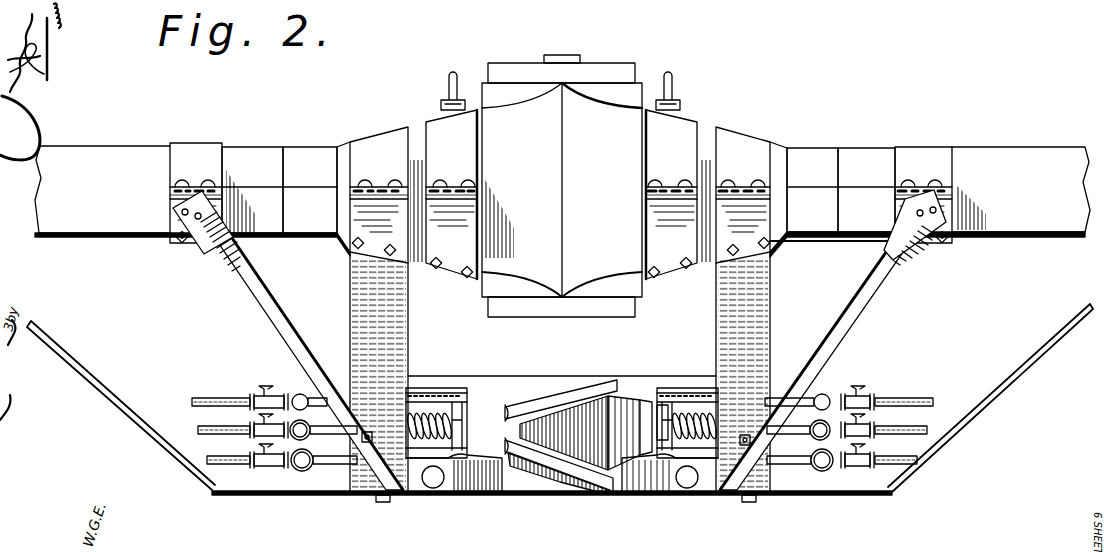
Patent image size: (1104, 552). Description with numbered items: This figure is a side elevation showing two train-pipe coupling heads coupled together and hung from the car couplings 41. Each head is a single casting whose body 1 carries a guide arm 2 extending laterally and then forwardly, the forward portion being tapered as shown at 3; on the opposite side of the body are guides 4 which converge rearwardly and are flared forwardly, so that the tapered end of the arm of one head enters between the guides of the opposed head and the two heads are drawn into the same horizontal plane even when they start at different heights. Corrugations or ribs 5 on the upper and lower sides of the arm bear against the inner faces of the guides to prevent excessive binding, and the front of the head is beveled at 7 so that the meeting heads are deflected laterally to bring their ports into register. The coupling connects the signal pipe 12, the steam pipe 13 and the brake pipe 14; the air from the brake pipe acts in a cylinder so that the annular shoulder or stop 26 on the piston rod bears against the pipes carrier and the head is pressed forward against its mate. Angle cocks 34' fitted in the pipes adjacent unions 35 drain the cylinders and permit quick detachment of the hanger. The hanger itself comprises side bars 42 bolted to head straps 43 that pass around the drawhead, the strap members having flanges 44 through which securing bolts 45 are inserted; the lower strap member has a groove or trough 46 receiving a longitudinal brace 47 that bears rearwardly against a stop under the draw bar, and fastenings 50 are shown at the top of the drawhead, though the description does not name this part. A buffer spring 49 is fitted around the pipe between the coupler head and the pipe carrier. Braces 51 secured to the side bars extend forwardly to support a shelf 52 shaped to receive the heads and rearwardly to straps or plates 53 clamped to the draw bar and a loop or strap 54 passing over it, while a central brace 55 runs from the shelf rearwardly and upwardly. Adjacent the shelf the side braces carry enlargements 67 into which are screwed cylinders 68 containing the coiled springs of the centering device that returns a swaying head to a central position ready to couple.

The body 1 is at (515, 478).
The guide arm 2 is at (564, 433).
The tapered end 3 is at (517, 434).
The guides 4 is at (560, 410).
The corrugations or ribs 5 is at (617, 391).
The beveled front 7 is at (648, 394).
The signal pipe 12 is at (210, 398).
The steam pipe 13 is at (220, 466).
The brake pipe 14 is at (198, 430).
The annular shoulder or stop 26 is at (668, 408).
The angle cocks 34' is at (580, 446).
The unions 35 is at (299, 396).
The car coupling 41 is at (562, 186).
The side bars 42 is at (560, 372).
The head straps 43 is at (561, 207).
The flanges 44 is at (380, 182).
The securing bolts 45 is at (772, 178).
The groove or trough 46 is at (366, 180).
The longitudinal brace 47 is at (802, 239).
The buffer spring 49 is at (413, 418).
The bolt 50 is at (441, 108).
The braces 51 is at (238, 272).
The shelf 52 is at (895, 274).
The straps or plates 53 is at (172, 236).
The loop or strap 54 is at (913, 163).
The central brace 55 is at (90, 385).
The enlargements 67 is at (473, 490).
The cylinders 68 is at (430, 485).